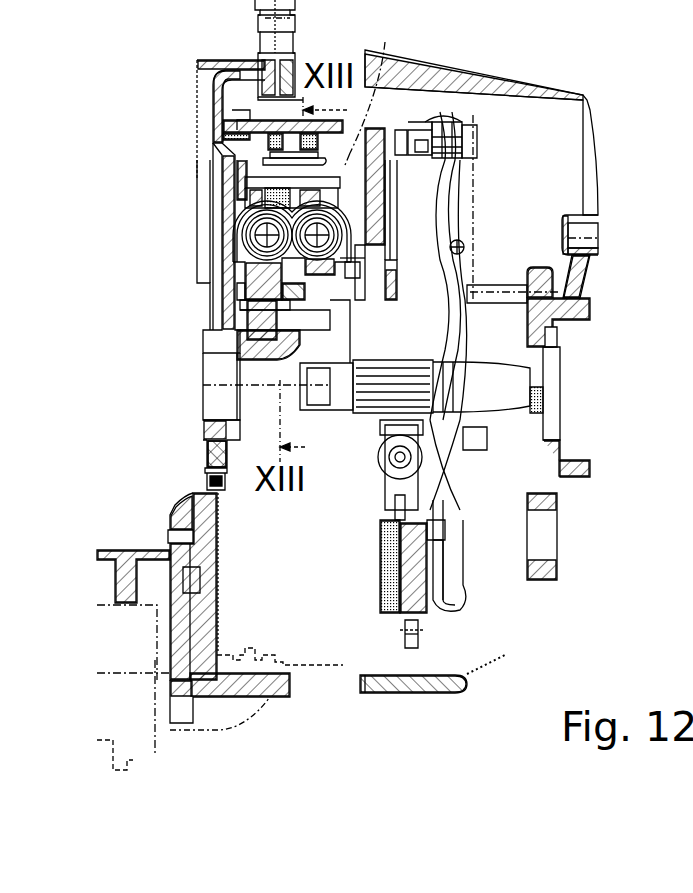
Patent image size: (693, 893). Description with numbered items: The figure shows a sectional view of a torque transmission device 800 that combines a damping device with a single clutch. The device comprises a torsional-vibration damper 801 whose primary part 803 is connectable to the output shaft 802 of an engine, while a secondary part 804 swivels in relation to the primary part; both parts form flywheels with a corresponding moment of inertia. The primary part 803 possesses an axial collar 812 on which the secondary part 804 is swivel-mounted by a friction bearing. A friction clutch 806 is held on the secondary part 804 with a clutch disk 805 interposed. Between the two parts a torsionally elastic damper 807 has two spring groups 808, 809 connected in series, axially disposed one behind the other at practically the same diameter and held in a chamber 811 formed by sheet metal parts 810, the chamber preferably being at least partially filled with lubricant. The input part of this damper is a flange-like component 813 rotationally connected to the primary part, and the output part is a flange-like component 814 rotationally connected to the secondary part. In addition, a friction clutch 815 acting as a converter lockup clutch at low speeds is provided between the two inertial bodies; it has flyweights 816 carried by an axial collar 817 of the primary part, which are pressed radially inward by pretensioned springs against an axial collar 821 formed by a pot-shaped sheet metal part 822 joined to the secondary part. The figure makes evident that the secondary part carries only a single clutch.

The torque transmission device 800 is at (515, 125).
The torsional-vibration damper 801 is at (212, 205).
The output shaft 802 is at (210, 427).
The primary part 803 is at (263, 370).
The secondary part 804 is at (383, 127).
The clutch disk 805 is at (382, 422).
The friction clutch 806 is at (477, 178).
The torsionally elastic damper 807 is at (233, 260).
The spring group 808 is at (240, 228).
The spring group 809 is at (240, 230).
The sheet metal parts 810 is at (305, 180).
The chamber 811 is at (290, 163).
The axial collar 812 is at (297, 363).
The flange-like component 813 is at (263, 287).
The flange-like component 814 is at (350, 270).
The friction clutch 815 is at (257, 120).
The flyweights 816 is at (372, 90).
The axial collar 817 is at (290, 120).
The axial collar 821 is at (330, 170).
The pot-shaped formed sheet metal part 822 is at (357, 227).